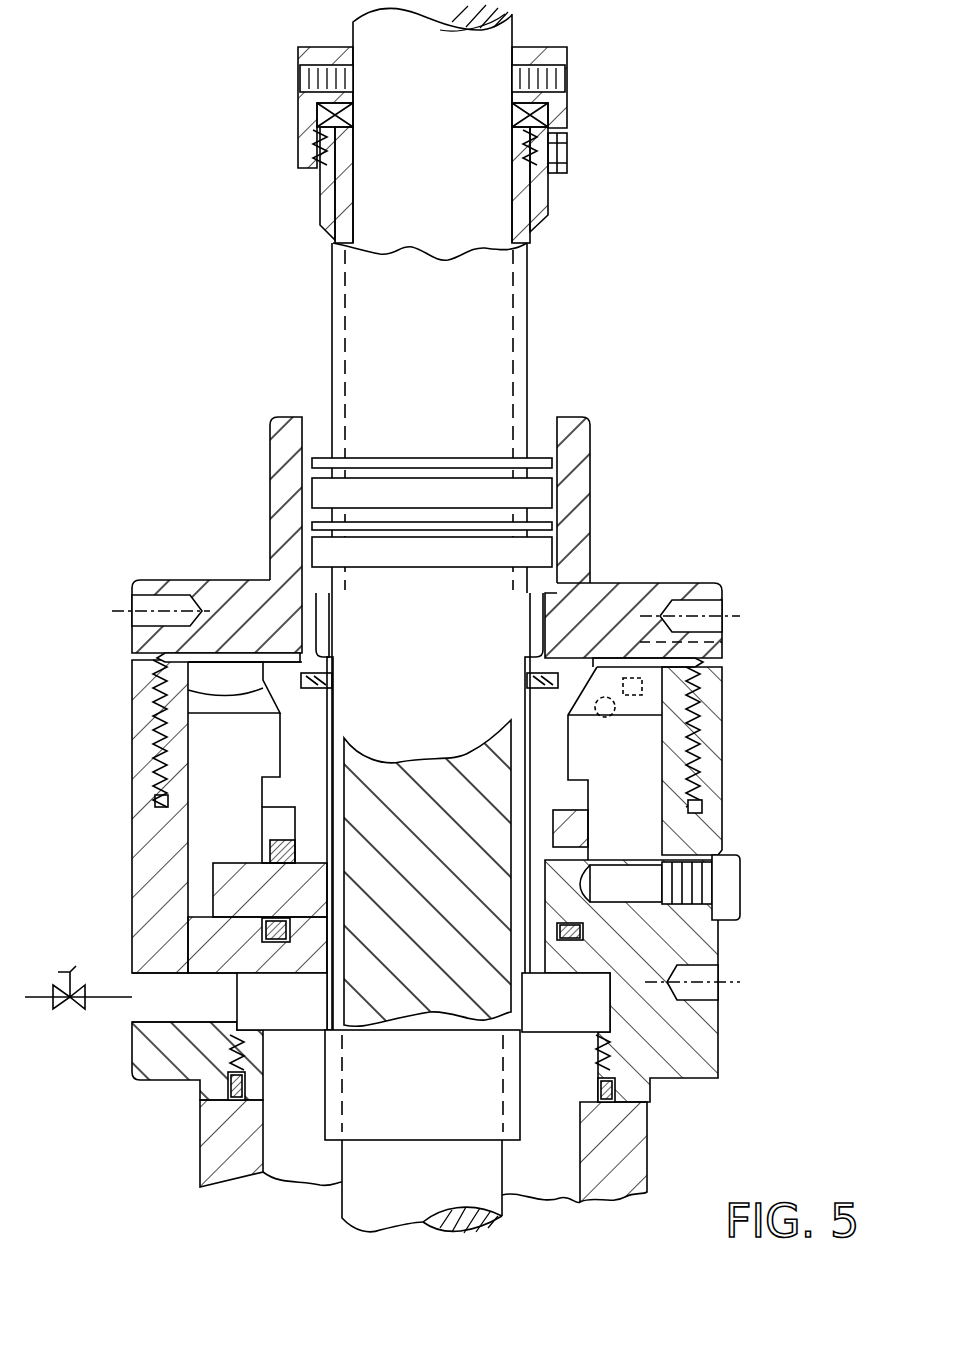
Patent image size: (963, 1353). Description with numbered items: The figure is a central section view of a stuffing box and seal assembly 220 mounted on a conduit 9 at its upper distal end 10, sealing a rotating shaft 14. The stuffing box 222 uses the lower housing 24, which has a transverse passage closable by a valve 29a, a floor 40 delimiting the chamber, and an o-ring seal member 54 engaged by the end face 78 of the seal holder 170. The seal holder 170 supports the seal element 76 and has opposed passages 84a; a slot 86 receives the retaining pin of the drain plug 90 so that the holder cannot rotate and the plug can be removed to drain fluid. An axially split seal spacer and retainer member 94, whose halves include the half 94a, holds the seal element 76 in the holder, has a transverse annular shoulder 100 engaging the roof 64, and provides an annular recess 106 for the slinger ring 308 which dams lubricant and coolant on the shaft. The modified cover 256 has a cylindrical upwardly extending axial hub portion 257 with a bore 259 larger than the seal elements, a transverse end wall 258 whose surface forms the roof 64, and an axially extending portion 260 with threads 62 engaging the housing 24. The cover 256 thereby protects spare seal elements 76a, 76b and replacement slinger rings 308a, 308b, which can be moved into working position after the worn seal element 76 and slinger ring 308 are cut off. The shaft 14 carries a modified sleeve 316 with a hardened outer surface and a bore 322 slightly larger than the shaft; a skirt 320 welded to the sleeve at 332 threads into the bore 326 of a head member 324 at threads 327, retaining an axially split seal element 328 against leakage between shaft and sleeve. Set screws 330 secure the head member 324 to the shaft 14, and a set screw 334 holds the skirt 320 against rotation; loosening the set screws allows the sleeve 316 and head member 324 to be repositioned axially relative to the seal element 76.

The conduit 9 is at (218, 1197).
The upper distal end 10 is at (647, 1128).
The shaft 14 is at (340, 1213).
The lower housing 24 is at (128, 1050).
The valve 29a is at (60, 1008).
The floor 40 is at (600, 948).
The o-ring seal member 54 is at (268, 945).
The threads 62 is at (705, 785).
The roof 64 is at (230, 640).
The seal element 76 is at (258, 872).
The spare seal element 76a is at (552, 550).
The spare seal element 76b is at (552, 490).
The end face 78 is at (185, 962).
The passages 84a is at (278, 812).
The slot 86 is at (640, 868).
The drain plug 90 is at (735, 905).
The seal spacer and retainer member 94 is at (590, 736).
The retainer half 94a is at (160, 678).
The transverse annular shoulder 100 is at (565, 637).
The annular recess 106 is at (290, 665).
The seal holder 170 is at (600, 862).
The stuffing box and seal assembly 220 is at (763, 580).
The stuffing box 222 is at (735, 667).
The cover 256 is at (200, 590).
The axial hub portion 257 is at (270, 452).
The transverse end wall 258 is at (625, 590).
The bore 259 is at (557, 425).
The axially extending portion 260 is at (140, 780).
The slinger ring 308 is at (325, 692).
The replacement slinger ring 308a is at (410, 522).
The replacement slinger ring 308b is at (472, 458).
The sleeve 316 is at (527, 290).
The skirt 320 is at (548, 200).
The bore 322 is at (345, 1035).
The head member 324 is at (567, 55).
The bore 326 is at (353, 112).
The threads 327 is at (320, 195).
The seal element 328 is at (512, 112).
The set screws 330 is at (300, 78).
The weld 332 is at (540, 228).
The set screw 334 is at (567, 155).